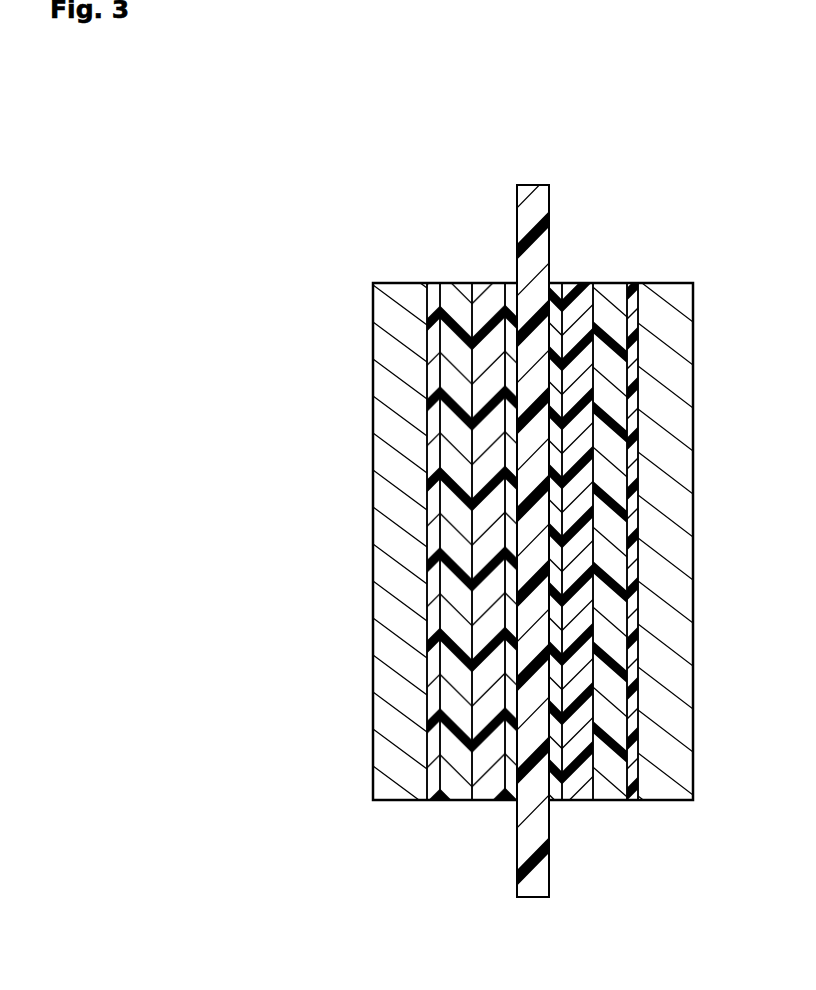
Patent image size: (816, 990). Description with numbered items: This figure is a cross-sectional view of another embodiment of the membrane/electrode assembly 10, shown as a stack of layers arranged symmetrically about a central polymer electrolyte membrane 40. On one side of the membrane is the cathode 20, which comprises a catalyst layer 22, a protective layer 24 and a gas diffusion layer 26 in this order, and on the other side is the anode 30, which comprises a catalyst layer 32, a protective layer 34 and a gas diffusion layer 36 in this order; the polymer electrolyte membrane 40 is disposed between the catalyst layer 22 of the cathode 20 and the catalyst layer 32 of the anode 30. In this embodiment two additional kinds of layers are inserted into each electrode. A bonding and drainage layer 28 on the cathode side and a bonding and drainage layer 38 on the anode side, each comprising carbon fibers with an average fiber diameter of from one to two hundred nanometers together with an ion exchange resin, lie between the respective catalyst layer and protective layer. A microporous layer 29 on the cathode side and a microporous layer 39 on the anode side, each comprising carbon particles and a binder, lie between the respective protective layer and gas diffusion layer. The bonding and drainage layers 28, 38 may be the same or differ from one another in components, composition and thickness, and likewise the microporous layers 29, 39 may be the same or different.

The membrane/electrode assembly 10 is at (533, 137).
The cathode 20 is at (509, 873).
The catalyst layer 22 is at (513, 794).
The protective layer 24 is at (455, 792).
The gas diffusion layer 26 is at (397, 800).
The bonding and drainage layer 28 is at (487, 800).
The microporous layer 29 is at (432, 800).
The anode 30 is at (712, 873).
The catalyst layer 32 is at (560, 795).
The protective layer 34 is at (613, 795).
The gas diffusion layer 36 is at (673, 792).
The bonding and drainage layer 38 is at (583, 795).
The microporous layer 39 is at (637, 795).
The polymer electrolyte membrane 40 is at (535, 898).